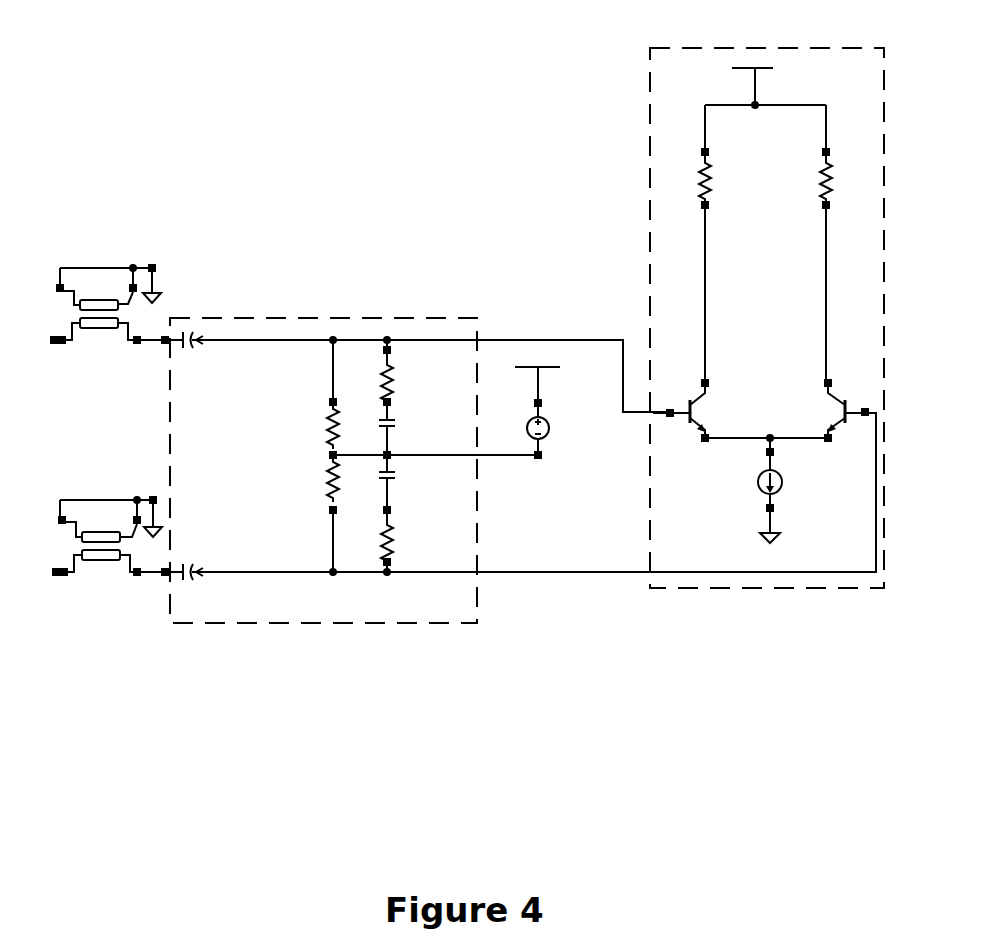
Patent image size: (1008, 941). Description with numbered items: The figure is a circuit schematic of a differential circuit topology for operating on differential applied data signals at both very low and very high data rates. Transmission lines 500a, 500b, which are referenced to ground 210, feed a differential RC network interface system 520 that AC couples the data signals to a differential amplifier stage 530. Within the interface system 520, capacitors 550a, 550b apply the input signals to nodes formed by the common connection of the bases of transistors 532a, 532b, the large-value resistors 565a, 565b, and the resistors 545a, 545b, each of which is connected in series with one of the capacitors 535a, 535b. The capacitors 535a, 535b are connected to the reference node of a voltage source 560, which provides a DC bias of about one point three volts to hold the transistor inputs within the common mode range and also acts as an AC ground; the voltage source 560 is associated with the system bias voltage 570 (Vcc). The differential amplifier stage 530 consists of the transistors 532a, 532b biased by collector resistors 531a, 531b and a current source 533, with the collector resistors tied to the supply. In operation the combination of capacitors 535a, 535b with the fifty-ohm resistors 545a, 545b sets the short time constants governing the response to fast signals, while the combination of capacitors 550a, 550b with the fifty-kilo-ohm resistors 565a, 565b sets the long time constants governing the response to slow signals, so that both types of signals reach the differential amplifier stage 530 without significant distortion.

The ground 210 is at (158, 283).
The transmission line 500a is at (92, 330).
The transmission line 500b is at (95, 562).
The capacitor 550a is at (187, 350).
The capacitor 550b is at (187, 582).
The differential RC network interface system 520 is at (372, 318).
The resistor 565a is at (326, 414).
The resistor 565b is at (326, 472).
The resistor 545a is at (400, 377).
The resistor 545b is at (400, 542).
The capacitor 535a is at (396, 431).
The capacitor 535b is at (396, 486).
The voltage source 560 is at (547, 436).
The system bias voltage 570 is at (542, 366).
The differential amplifier stage 530 is at (720, 48).
The collector resistor 531a is at (712, 190).
The collector resistor 531b is at (832, 190).
The transistor 532a is at (713, 412).
The transistor 532b is at (834, 406).
The current source 533 is at (757, 484).